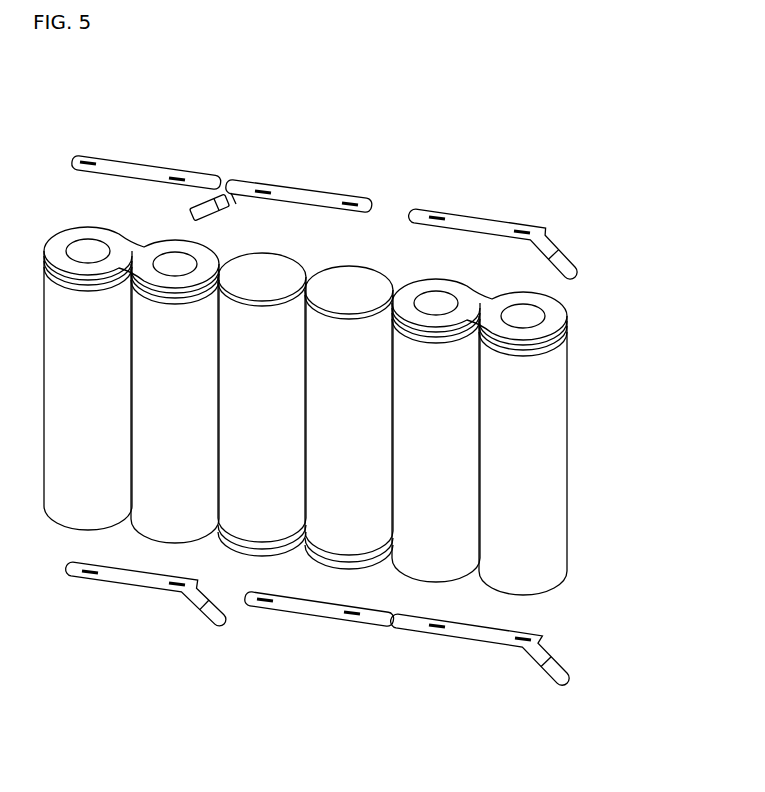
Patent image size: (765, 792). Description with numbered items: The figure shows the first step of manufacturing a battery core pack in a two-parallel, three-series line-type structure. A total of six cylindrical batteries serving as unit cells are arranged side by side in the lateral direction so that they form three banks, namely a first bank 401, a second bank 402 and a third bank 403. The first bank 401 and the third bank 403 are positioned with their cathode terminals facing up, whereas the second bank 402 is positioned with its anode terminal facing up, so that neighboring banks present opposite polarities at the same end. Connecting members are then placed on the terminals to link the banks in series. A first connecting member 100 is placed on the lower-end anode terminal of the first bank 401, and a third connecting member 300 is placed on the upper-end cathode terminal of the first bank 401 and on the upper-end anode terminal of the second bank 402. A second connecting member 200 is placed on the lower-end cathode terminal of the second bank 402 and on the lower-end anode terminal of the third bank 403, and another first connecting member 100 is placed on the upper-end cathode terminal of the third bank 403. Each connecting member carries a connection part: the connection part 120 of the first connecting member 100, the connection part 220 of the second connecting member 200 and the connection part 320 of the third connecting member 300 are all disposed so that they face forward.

The first connecting member 100 is at (467, 210).
The connection part 120 is at (556, 262).
The second connecting member 200 is at (460, 636).
The connection part 220 is at (562, 667).
The third connecting member 300 is at (150, 162).
The connection part 320 is at (236, 204).
The first bank 401 is at (216, 402).
The second bank 402 is at (393, 428).
The third bank 403 is at (565, 445).